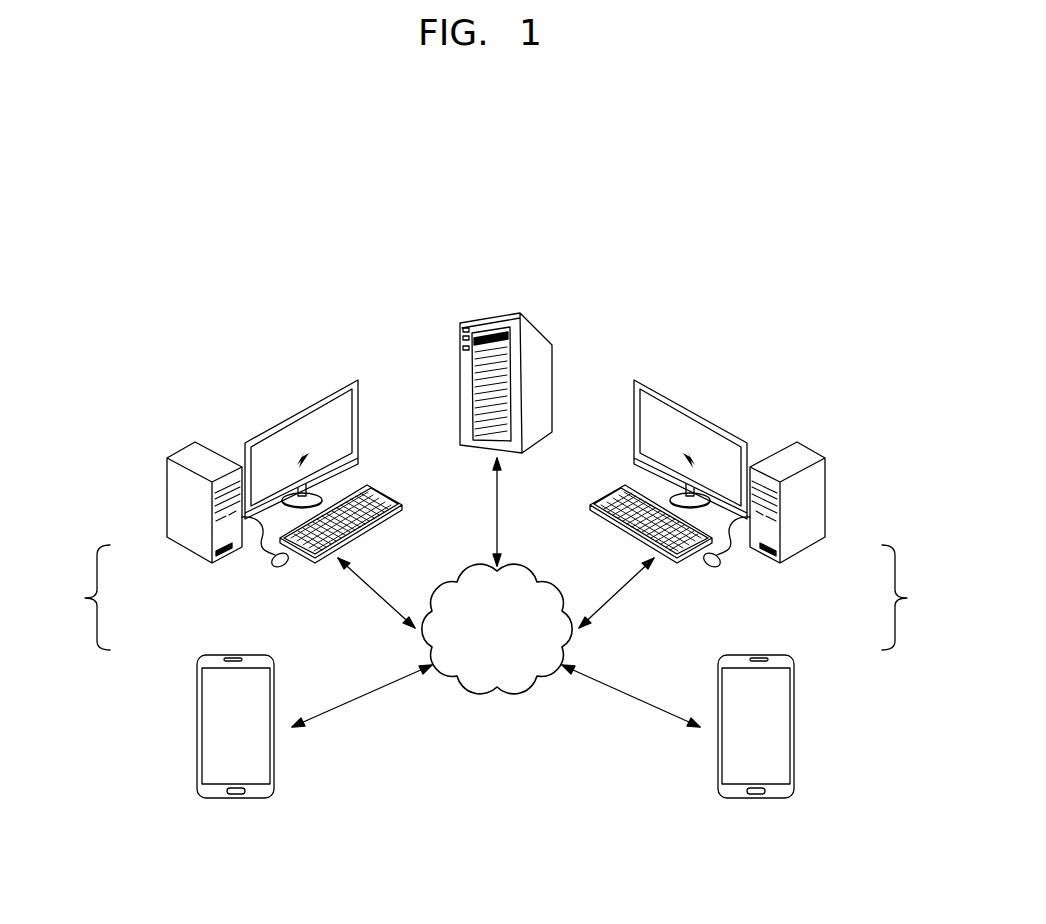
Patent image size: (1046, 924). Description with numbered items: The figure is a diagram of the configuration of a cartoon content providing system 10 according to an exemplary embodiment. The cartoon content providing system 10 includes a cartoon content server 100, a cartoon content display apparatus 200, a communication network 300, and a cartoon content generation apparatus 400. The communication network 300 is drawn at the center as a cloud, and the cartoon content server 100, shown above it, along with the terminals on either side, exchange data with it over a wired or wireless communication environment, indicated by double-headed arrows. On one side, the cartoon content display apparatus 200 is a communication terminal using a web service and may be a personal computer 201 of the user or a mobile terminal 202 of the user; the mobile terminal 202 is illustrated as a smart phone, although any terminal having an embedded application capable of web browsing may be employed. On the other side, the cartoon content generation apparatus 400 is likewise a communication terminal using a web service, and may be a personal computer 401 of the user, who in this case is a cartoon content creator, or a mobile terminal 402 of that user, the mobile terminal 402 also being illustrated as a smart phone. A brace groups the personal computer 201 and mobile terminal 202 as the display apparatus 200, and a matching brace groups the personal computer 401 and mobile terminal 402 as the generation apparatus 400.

The cartoon content providing system 10 is at (710, 222).
The cartoon content server 100 is at (537, 332).
The cartoon content display apparatus 200 is at (77, 597).
The personal computer 201 is at (167, 494).
The mobile terminal 202 is at (202, 725).
The communication network 300 is at (547, 577).
The cartoon content generation apparatus 400 is at (914, 597).
The personal computer 401 is at (825, 494).
The mobile terminal 402 is at (790, 725).